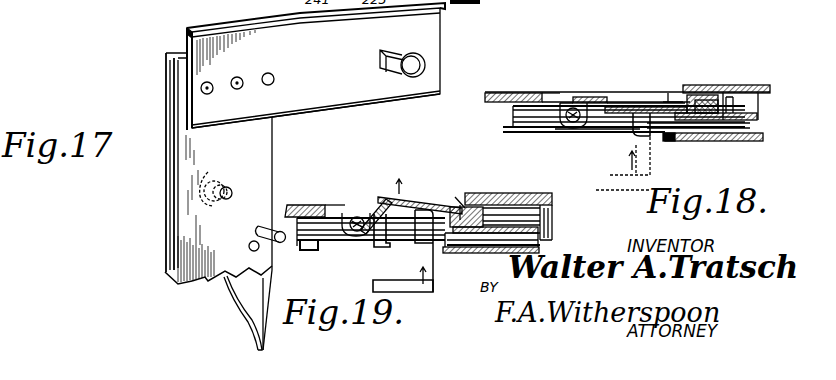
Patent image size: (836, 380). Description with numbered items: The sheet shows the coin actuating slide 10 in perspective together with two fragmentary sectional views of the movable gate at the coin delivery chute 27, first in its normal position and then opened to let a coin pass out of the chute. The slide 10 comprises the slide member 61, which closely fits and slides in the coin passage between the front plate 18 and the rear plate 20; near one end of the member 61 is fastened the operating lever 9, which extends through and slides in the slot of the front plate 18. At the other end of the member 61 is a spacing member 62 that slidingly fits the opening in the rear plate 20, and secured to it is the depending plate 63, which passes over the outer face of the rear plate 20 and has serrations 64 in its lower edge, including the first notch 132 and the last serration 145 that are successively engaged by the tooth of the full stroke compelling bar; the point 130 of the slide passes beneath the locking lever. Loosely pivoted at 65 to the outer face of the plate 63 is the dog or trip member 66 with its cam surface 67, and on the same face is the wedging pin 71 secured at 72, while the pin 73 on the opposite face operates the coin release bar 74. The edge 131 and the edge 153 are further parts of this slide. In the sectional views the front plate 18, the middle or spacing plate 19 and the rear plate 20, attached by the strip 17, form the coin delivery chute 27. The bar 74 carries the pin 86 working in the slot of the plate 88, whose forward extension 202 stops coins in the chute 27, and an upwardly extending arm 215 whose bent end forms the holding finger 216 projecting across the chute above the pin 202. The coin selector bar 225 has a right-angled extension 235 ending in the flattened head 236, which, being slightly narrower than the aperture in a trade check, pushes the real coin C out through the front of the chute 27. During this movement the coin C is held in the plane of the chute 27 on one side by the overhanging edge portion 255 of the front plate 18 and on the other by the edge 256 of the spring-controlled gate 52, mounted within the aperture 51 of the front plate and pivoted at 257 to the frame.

In FIG. 17, the coin actuating slide 10 is at (229, 25).
In FIG. 17, the point of the slide 130 is at (189, 34).
In FIG. 17, the bracket cap 131 is at (166, 58).
In FIG. 17, the spacing member 62 is at (176, 87).
In FIG. 17, the depending plate 63 is at (167, 168).
In FIG. 17, the slide member 61 is at (343, 101).
In FIG. 17, the operating lever 9 is at (418, 57).
In FIG. 17, the wedging pin 71 is at (209, 176).
In FIG. 17, the securing point of wedging pin 72 is at (231, 191).
In FIG. 17, the pin 73 is at (268, 230).
In FIG. 17, the pivot 65 is at (250, 244).
In FIG. 17, the first notch 132 is at (186, 286).
In FIG. 17, the serrations 64 is at (214, 282).
In FIG. 17, the dog or trip member 66 is at (238, 300).
In FIG. 17, the cam surface 67 is at (248, 312).
In FIG. 17, the guide edge 153 is at (264, 340).
In FIG. 19, the front plate 18 is at (305, 210).
In FIG. 18, the front plate 18 is at (500, 93).
In FIG. 19, the aperture 51 is at (330, 206).
In FIG. 18, the aperture 51 is at (548, 95).
In FIG. 19, the gate 52 is at (363, 215).
In FIG. 18, the gate 52 is at (580, 97).
In FIG. 19, the middle or spacing plate 19 is at (371, 229).
In FIG. 18, the middle or spacing plate 19 is at (520, 111).
In FIG. 19, the rear plate 20 is at (496, 220).
In FIG. 18, the rear plate 20 is at (520, 122).
In FIG. 19, the coin release bar 74 is at (314, 250).
In FIG. 18, the coin release bar 74 is at (512, 132).
In FIG. 19, the last serration 145 is at (298, 248).
In FIG. 19, the edge of the gate 256 is at (380, 192).
In FIG. 18, the edge of the gate 256 is at (605, 96).
In FIG. 19, the pivot of the gate 257 is at (352, 222).
In FIG. 18, the pivot of the gate 257 is at (569, 121).
In FIG. 19, the real coin C is at (411, 188).
In FIG. 18, the real coin C is at (625, 87).
In FIG. 19, the holding finger 216 is at (386, 248).
In FIG. 18, the holding finger 216 is at (612, 106).
In FIG. 19, the upwardly extending arm 215 is at (331, 248).
In FIG. 18, the upwardly extending arm 215 is at (592, 130).
In FIG. 19, the head 236 is at (431, 243).
In FIG. 18, the head 236 is at (628, 147).
In FIG. 19, the extension 235 is at (428, 258).
In FIG. 18, the extension 235 is at (636, 177).
In FIG. 19, the coin selector bar 225 is at (415, 283).
In FIG. 18, the coin selector bar 225 is at (621, 197).
In FIG. 19, the overhanging edge portion 255 is at (460, 200).
In FIG. 18, the overhanging edge portion 255 is at (665, 95).
In FIG. 19, the pin extension 202 is at (490, 198).
In FIG. 18, the pin extension 202 is at (745, 85).
In FIG. 19, the strip 17 is at (553, 197).
In FIG. 18, the strip 17 is at (767, 89).
In FIG. 19, the coin delivery chute 27 is at (486, 246).
In FIG. 18, the coin delivery chute 27 is at (698, 90).
In FIG. 19, the pin 86 is at (466, 248).
In FIG. 18, the pin 86 is at (708, 143).
In FIG. 19, the plate 88 is at (539, 250).
In FIG. 18, the plate 88 is at (752, 134).